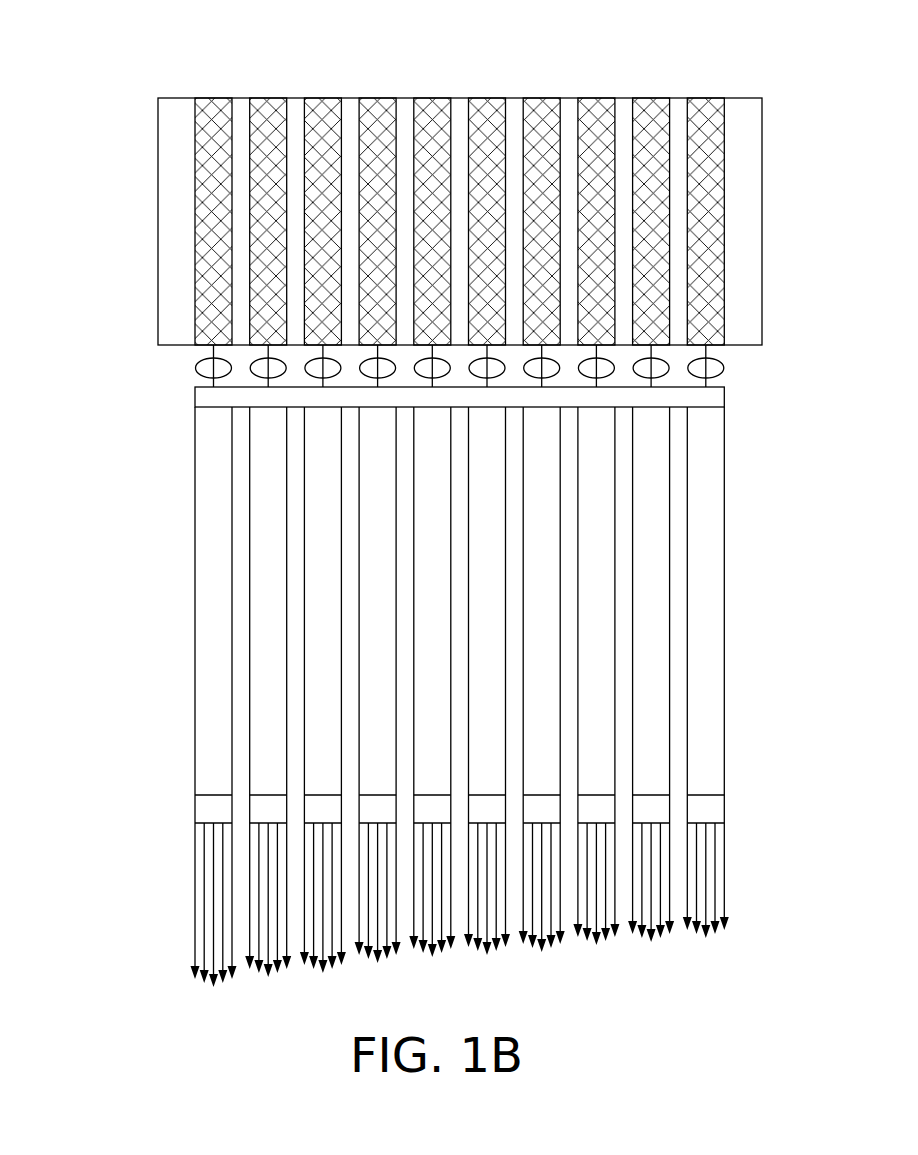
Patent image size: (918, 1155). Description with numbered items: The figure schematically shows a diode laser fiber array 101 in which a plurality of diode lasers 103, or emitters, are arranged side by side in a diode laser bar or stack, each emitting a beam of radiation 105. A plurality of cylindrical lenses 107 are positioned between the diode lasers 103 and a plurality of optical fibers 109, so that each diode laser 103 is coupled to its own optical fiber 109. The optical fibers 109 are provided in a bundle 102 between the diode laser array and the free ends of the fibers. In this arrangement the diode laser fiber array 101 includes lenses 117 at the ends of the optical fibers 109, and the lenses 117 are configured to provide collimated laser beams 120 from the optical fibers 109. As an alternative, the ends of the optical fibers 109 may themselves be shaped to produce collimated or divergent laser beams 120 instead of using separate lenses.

The diode laser fiber array 101 is at (141, 183).
The bundle 102 is at (200, 394).
The diode lasers 103 is at (583, 98).
The beam of radiation 105 is at (670, 372).
The cylindrical lenses 107 is at (205, 371).
The optical fibers 109 is at (325, 700).
The lenses 117 is at (210, 807).
The collimated laser beams 120 is at (192, 930).